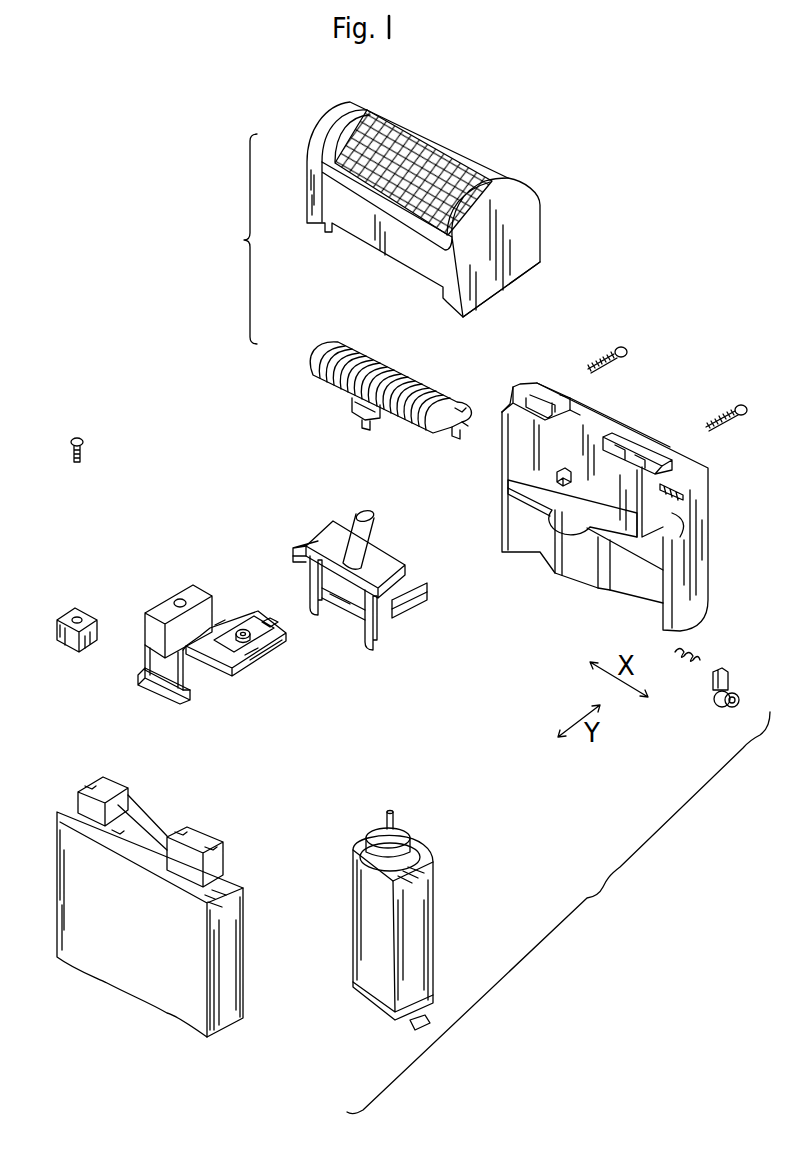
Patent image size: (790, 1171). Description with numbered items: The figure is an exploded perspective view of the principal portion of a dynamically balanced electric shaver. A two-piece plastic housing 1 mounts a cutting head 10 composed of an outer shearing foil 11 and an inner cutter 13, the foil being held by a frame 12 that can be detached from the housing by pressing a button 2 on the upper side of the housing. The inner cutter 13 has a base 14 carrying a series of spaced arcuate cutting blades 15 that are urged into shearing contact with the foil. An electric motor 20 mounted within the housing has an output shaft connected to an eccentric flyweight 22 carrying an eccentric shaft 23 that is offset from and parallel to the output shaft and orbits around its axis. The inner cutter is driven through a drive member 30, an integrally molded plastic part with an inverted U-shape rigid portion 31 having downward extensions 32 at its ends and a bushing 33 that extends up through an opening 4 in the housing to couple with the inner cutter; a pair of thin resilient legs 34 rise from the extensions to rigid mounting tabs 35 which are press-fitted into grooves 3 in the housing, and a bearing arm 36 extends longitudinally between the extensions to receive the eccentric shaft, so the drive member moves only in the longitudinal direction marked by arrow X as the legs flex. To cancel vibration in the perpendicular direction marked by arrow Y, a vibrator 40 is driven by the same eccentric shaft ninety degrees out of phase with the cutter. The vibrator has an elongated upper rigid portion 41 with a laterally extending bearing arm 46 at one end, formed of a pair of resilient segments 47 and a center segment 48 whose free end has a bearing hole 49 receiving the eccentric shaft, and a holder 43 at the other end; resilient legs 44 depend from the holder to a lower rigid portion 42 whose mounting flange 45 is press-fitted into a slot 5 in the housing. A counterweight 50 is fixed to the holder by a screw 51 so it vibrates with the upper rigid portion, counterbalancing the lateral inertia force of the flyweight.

The housing 1 is at (605, 916).
The button 2 is at (740, 695).
The grooves 3 is at (525, 425).
The opening 4 is at (600, 438).
The slot 5 is at (507, 498).
The cutting head 10 is at (220, 230).
The outer shearing foil 11 is at (477, 112).
The frame 12 is at (463, 113).
The inner cutter 13 is at (317, 375).
The base 14 is at (363, 403).
The arcuate cutting blades 15 is at (420, 381).
The electric motor 20 is at (433, 877).
The eccentric flyweight 22 is at (366, 824).
The eccentric shaft 23 is at (396, 814).
The drive member 30 is at (363, 583).
The inverted U-shape rigid portion 31 is at (393, 557).
The downward extensions 32 is at (328, 593).
The bushing 33 is at (377, 513).
The resilient legs 34 is at (303, 572).
The mounting tab 35 is at (300, 542).
The bearing arm 36 is at (347, 613).
The vibrator 40 is at (203, 639).
The upper rigid portion 41 is at (222, 670).
The lower rigid portion 42 is at (197, 676).
The holder 43 is at (197, 598).
The resilient legs 44 is at (187, 612).
The mounting flange 45 is at (157, 693).
The bearing arm 46 is at (270, 653).
The resilient segments 47 is at (227, 620).
The center segment 48 is at (266, 622).
The bearing hole 49 is at (243, 630).
The counterweight 50 is at (60, 648).
The screw 51 is at (137, 427).